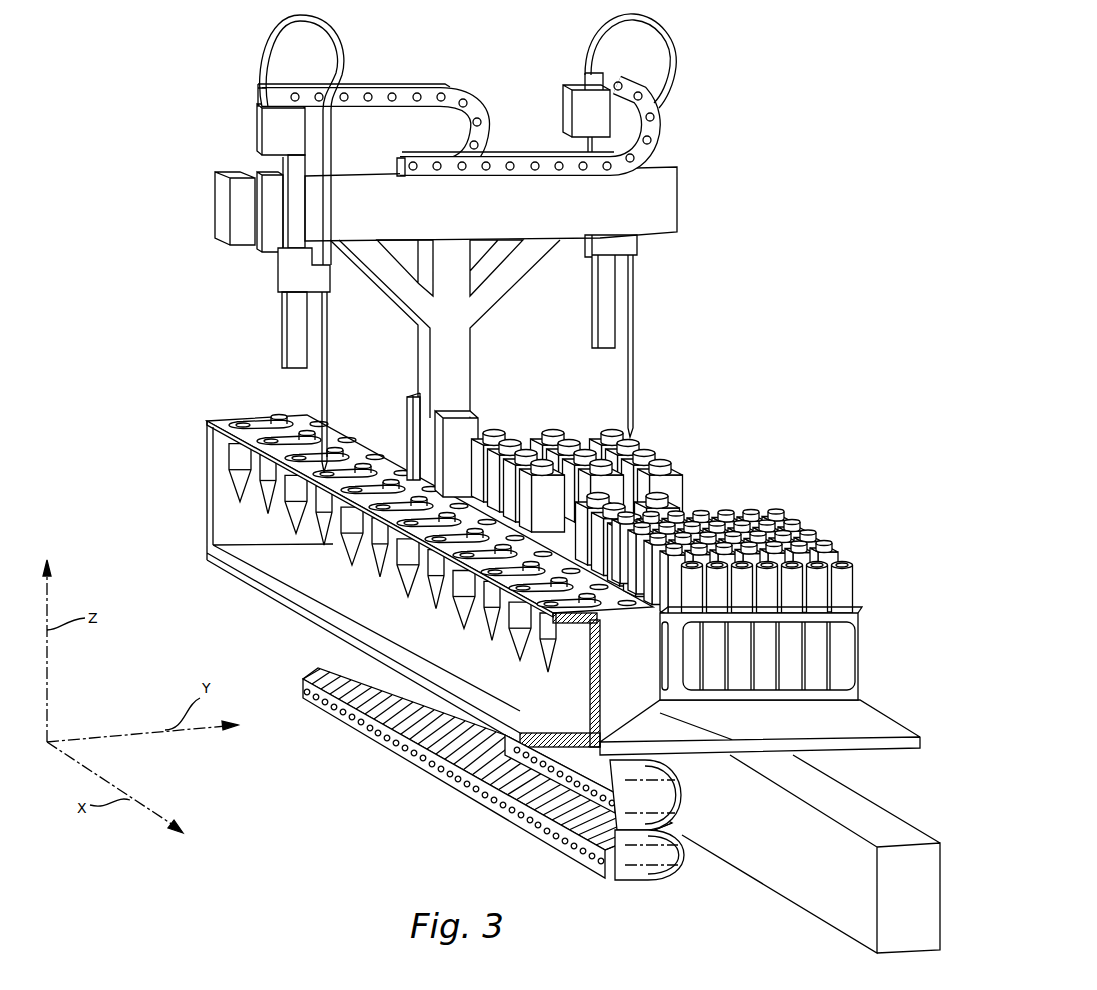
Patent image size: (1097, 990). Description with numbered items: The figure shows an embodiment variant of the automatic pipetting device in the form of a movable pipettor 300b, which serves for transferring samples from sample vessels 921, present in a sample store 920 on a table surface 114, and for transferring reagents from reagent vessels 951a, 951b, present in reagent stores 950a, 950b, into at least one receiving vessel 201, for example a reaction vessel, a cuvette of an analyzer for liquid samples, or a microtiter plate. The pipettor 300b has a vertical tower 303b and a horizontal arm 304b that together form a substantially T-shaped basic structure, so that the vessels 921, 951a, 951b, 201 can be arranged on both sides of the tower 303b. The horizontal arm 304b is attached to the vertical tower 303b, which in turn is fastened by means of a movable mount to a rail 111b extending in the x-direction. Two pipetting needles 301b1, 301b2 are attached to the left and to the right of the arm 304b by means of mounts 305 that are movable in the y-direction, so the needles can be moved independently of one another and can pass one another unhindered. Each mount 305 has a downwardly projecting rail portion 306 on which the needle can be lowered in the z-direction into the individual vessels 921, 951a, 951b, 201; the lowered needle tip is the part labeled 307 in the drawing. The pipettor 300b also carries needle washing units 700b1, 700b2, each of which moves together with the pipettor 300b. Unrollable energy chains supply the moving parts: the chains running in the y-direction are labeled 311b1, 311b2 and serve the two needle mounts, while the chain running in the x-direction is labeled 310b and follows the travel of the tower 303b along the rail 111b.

The rail 111b is at (800, 882).
The table surface 114 is at (877, 728).
The receiving vessel 201 is at (335, 455).
The movable pipettor 300b is at (549, 307).
The pipetting needle 301b1 is at (292, 276).
The pipetting needle 301b2 is at (580, 117).
The vertical tower 303b is at (460, 372).
The horizontal arm 304b is at (655, 213).
The mount 305 is at (275, 218).
The rail portion 306 is at (296, 322).
The probe needle 307 is at (322, 393).
The energy chain 310b is at (655, 855).
The energy chain 311b1 is at (405, 88).
The energy chain 311b2 is at (652, 126).
The needle washing unit 700b1 is at (470, 438).
The needle washing unit 700b2 is at (407, 420).
The sample store 920 is at (804, 624).
The sample vessel 921 is at (848, 578).
The reagent store 950a is at (738, 536).
The reagent store 950b is at (627, 500).
The reagent vessel 951a is at (760, 528).
The reagent vessel 951b is at (672, 480).